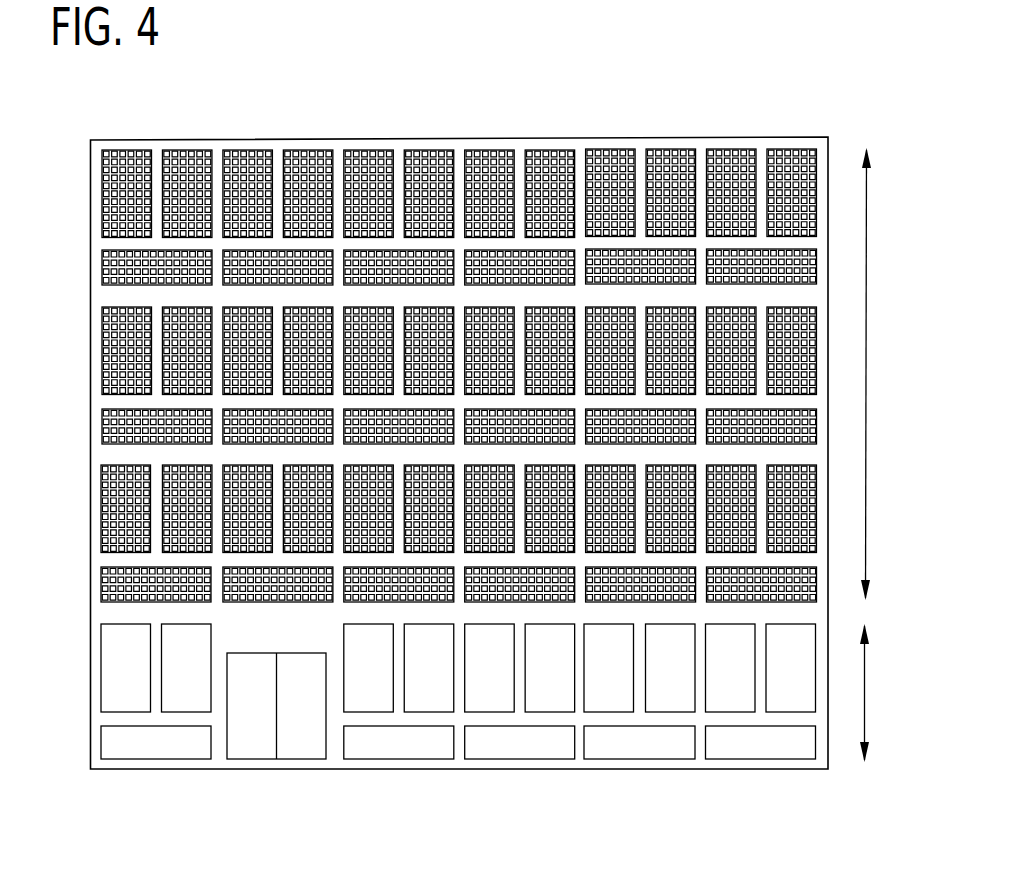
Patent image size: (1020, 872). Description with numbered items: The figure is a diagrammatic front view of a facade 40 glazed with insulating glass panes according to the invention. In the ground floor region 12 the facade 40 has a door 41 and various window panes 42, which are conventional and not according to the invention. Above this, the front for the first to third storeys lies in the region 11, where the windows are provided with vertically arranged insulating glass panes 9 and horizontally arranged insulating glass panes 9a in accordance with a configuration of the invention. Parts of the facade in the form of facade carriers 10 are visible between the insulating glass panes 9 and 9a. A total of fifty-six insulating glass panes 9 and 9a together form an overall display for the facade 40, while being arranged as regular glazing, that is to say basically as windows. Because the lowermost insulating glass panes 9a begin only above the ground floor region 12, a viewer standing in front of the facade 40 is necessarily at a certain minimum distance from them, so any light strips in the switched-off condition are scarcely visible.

The vertically arranged insulating glass pane 9 is at (103, 186).
The horizontally arranged insulating glass pane 9a is at (103, 267).
The facade carrier 10 is at (155, 157).
The region of the first to third storeys 11 is at (877, 374).
The ground floor region 12 is at (876, 693).
The facade 40 is at (738, 97).
The door 41 is at (296, 752).
The window pane 42 is at (117, 667).